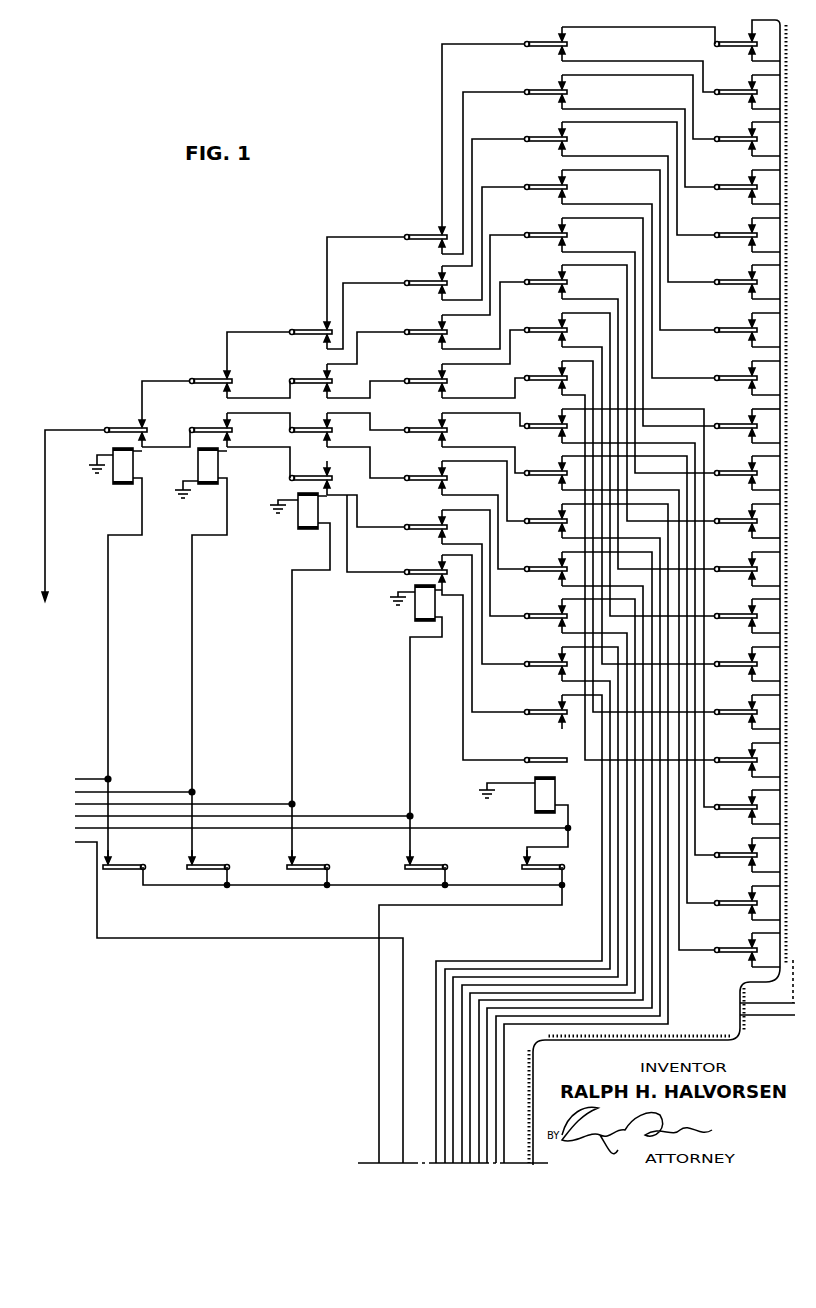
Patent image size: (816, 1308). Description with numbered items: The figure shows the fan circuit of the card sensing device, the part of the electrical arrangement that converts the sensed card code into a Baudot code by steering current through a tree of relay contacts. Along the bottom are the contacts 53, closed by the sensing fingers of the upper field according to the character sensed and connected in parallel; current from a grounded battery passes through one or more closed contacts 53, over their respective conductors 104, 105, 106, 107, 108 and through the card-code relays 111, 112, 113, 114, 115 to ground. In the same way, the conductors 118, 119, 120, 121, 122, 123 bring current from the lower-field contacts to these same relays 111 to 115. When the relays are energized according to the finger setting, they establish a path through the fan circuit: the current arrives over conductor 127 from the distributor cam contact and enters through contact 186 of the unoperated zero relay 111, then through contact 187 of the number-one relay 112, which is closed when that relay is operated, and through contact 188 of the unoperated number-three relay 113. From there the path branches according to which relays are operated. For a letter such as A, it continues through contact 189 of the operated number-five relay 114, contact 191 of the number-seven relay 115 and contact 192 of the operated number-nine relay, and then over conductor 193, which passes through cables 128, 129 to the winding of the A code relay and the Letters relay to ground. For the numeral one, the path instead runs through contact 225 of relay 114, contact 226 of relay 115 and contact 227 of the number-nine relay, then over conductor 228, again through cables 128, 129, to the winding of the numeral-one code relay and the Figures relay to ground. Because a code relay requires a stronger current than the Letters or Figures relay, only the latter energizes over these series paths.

The contacts 53 is at (112, 861).
The conductor 104 is at (113, 787).
The conductor 105 is at (196, 800).
The conductor 106 is at (296, 811).
The conductor 107 is at (413, 818).
The conductor 108 is at (561, 866).
The zero card-code relay 111 is at (117, 471).
The No. 1 card-code relay 112 is at (200, 460).
The No. 3 card-code relay 113 is at (300, 522).
The No. 5 card-code relay 114 is at (416, 613).
The No. 7 card-code relay 115 is at (535, 801).
The conductor 118 is at (97, 776).
The conductor 119 is at (178, 789).
The conductor 120 is at (268, 802).
The conductor 121 is at (388, 814).
The conductor 122 is at (500, 833).
The conductor 123 is at (96, 912).
The conductor 127 is at (48, 578).
The cable 128 is at (685, 1038).
The cable 129 is at (748, 1020).
The contact of relay 111 186 is at (140, 421).
The contact of relay 112 187 is at (225, 392).
The contact of relay 113 188 is at (324, 373).
The contact of relay 114 189 is at (436, 341).
The contact of relay 115 191 is at (560, 280).
The contact of relay 116 192 is at (752, 531).
The conductor 193 is at (752, 556).
The contact of relay 114 225 is at (440, 326).
The contact of relay 115 226 is at (559, 230).
The contact of relay 116 227 is at (752, 421).
The conductor 228 is at (755, 409).